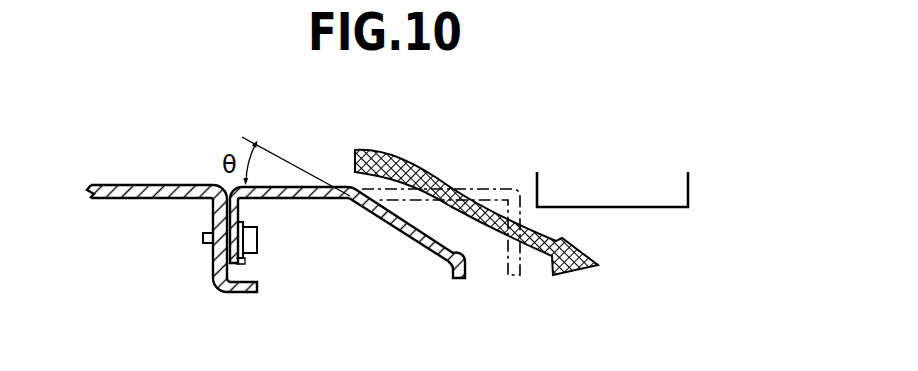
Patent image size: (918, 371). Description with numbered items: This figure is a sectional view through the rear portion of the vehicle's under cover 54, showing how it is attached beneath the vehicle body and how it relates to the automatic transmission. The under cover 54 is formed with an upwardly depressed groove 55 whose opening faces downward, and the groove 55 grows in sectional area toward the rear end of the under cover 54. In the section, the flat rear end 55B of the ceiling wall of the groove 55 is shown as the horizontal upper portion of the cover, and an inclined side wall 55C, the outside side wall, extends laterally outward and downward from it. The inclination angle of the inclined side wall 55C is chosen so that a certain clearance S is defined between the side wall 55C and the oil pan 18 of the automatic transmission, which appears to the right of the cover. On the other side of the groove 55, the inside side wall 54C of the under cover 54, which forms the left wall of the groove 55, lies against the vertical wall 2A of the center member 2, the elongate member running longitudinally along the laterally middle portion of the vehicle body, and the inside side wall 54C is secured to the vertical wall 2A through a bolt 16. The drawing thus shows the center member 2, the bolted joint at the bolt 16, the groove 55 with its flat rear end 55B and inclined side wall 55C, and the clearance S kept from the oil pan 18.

The center member 2 is at (137, 183).
The vertical wall of center member 2A is at (214, 262).
The bolt 16 is at (258, 236).
The oil pan 18 is at (690, 190).
The under cover 54 is at (400, 240).
The inside side wall 54C is at (241, 262).
The groove 55 is at (281, 186).
The flat rear end 55B is at (303, 186).
The inclined side wall 55C is at (412, 225).
The clearance S is at (467, 233).